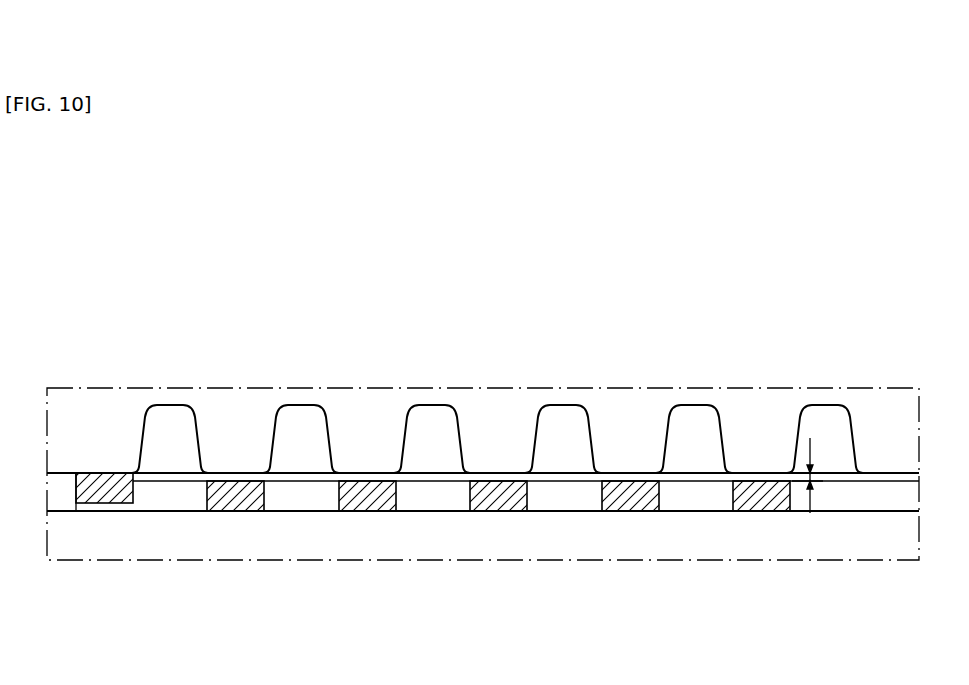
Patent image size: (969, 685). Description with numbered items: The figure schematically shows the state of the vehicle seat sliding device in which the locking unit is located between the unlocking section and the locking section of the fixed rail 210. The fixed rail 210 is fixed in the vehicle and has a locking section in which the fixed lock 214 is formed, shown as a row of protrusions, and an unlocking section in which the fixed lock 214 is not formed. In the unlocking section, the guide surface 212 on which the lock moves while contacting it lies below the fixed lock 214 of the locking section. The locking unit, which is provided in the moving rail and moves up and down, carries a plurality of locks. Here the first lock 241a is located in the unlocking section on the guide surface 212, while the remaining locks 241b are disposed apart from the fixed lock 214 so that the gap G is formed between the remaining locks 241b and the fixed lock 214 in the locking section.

The fixed rail 210 is at (103, 418).
The fixed lock 214 is at (232, 465).
The guide surface 212 is at (58, 476).
The first lock 241a is at (110, 504).
The remaining locks 241b is at (233, 512).
The gap G is at (816, 475).